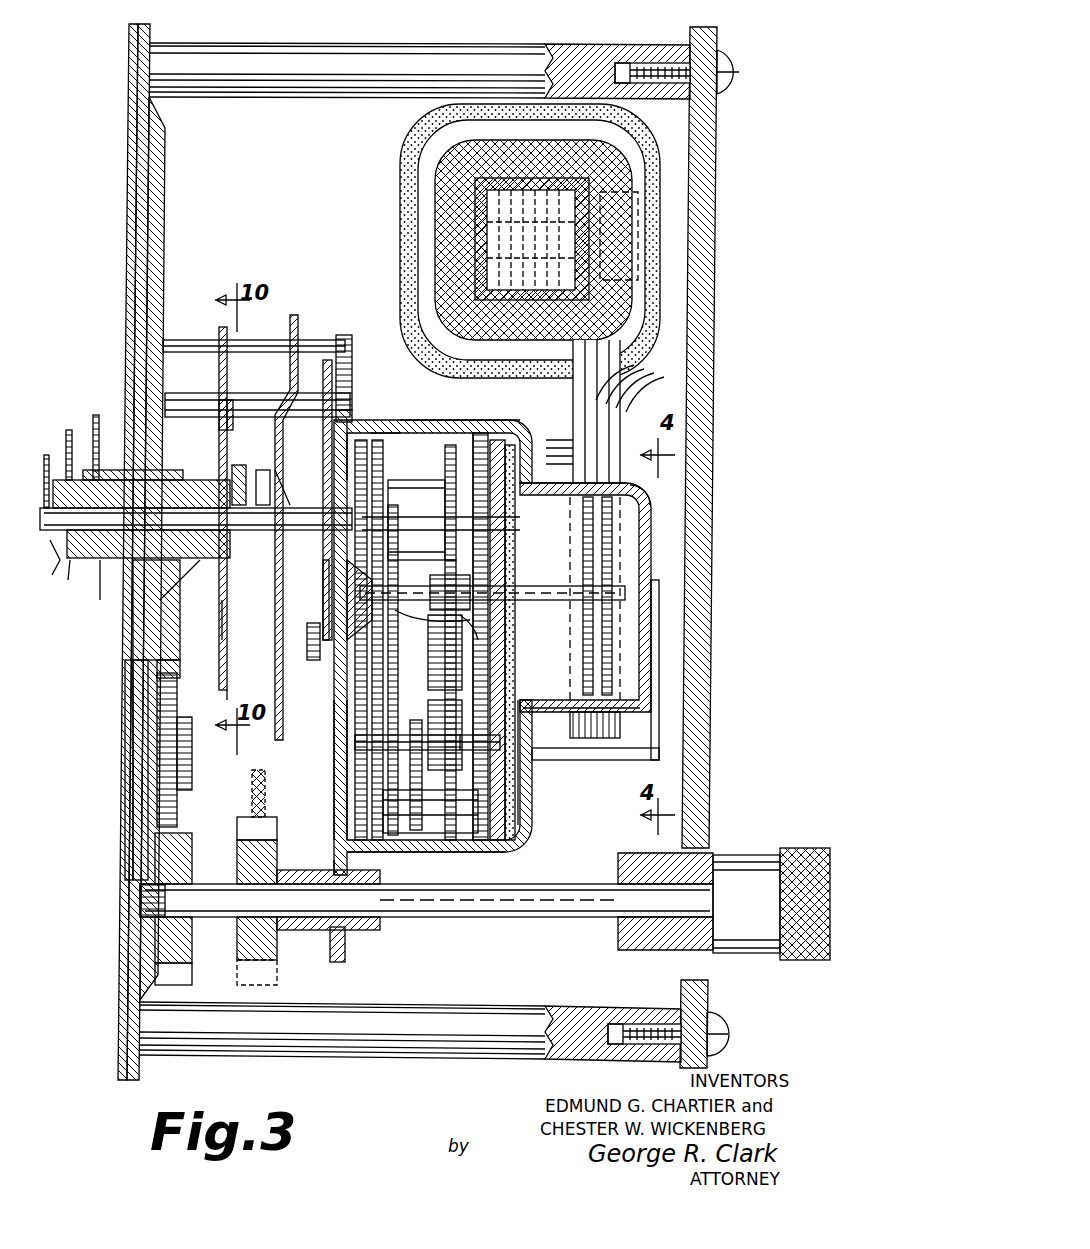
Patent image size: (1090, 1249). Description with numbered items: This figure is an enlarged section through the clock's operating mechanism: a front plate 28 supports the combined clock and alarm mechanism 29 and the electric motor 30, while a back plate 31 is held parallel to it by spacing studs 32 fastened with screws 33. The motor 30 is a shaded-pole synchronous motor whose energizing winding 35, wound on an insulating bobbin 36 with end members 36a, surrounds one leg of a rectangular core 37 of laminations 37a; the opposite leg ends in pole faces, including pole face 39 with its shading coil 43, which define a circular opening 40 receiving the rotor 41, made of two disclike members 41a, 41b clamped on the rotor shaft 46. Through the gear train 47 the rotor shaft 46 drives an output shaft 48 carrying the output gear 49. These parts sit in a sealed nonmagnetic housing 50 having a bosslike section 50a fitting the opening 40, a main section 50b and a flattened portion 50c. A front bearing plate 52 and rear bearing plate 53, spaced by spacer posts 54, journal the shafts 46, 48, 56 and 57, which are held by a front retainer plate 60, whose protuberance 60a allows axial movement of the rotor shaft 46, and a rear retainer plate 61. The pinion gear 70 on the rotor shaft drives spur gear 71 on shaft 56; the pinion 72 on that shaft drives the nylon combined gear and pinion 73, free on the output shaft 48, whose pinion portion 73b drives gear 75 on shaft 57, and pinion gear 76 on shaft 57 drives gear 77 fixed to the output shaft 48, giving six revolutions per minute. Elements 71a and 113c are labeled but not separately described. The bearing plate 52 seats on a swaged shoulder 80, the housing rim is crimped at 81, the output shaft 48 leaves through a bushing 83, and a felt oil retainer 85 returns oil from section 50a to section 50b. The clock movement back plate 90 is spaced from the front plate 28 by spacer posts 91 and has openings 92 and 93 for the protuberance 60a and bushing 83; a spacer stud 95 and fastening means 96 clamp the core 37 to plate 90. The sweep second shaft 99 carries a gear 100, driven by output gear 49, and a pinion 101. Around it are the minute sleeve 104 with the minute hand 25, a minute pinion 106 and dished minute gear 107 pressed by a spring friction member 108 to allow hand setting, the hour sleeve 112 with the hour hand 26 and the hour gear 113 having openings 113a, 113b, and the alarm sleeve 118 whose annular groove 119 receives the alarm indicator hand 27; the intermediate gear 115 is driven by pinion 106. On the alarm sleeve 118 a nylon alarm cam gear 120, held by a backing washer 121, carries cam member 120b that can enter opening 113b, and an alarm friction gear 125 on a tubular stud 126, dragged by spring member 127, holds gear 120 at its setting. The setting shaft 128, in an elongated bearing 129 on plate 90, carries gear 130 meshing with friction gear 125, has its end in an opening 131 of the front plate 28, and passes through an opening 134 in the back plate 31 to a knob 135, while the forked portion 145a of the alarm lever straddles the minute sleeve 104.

The minute hand 25 is at (48, 456).
The hour hand 26 is at (70, 432).
The alarm indicator hand 27 is at (108, 402).
The front plate 28 is at (150, 40).
The combined clock and alarm mechanism 29 is at (251, 688).
The electric motor 30 is at (456, 424).
The back plate 31 is at (712, 298).
The spacing studs 32 is at (440, 52).
The screws 33 is at (740, 66).
The energizing winding 35 is at (455, 168).
The insulating bobbin 36 is at (470, 192).
The end members 36a is at (432, 132).
The rectangular core 37 is at (628, 412).
The laminations 37a is at (636, 378).
The pole face 39 is at (618, 726).
The circular opening 40 is at (560, 486).
The rotor 41 is at (648, 548).
The disclike member 41a is at (660, 640).
The disclike member 41b is at (583, 644).
The shading coil 43 is at (625, 760).
The rotor shaft 46 is at (543, 586).
The gear train 47 is at (427, 754).
The output shaft 48 is at (478, 640).
The output gear 49 is at (310, 623).
The rotor and gear housing 50 is at (520, 852).
The bosslike circular section 50a is at (540, 714).
The main section 50b is at (447, 848).
The flattened portion 50c is at (425, 420).
The front bearing plate 52 is at (390, 433).
The rear bearing plate 53 is at (482, 442).
The spacer posts 54 is at (420, 468).
The shaft 56 is at (505, 530).
The shaft 57 is at (460, 750).
The front retainer plate 60 is at (355, 432).
The protuberance 60a is at (347, 590).
The rear retainer plate 61 is at (495, 436).
The rotor shaft pinion gear 70 is at (456, 580).
The spur gear 71 is at (448, 460).
The pinion gear 71a is at (439, 588).
The pinion 72 is at (402, 530).
The combined gear and pinion 73 is at (412, 735).
The pinion portion 73b is at (470, 625).
The gear 75 is at (420, 780).
The pinion gear 76 is at (450, 712).
The gear 77 is at (447, 652).
The shoulder 80 is at (372, 848).
The crimped portion 81 is at (345, 843).
The output shaft bushing 83 is at (340, 710).
The felt oil retainer 85 is at (532, 815).
The clock movement back plate 90 is at (345, 955).
The spacer posts 91 is at (280, 352).
The opening 92 is at (330, 585).
The opening 93 is at (340, 684).
The spacer stud 95 is at (557, 440).
The fastening means 96 is at (648, 470).
The sweep second shaft 99 is at (75, 535).
The sweep second gear 100 is at (327, 360).
The sweep second pinion 101 is at (335, 505).
The minute sleeve 104 is at (58, 572).
The minute pinion 106 is at (256, 463).
The minute gear 107 is at (298, 322).
The spring friction member 108 is at (278, 475).
The hour sleeve 112 is at (115, 480).
The hour gear 113 is at (222, 690).
The opening 113a is at (220, 402).
The opening 113b is at (224, 630).
The plate 113c is at (228, 402).
The intermediate gear 115 is at (252, 802).
The alarm sleeve 118 is at (70, 582).
The annular groove 119 is at (103, 587).
The alarm cam gear 120 is at (170, 645).
The cam member 120b is at (198, 587).
The backing washer 121 is at (133, 628).
The alarm friction gear 125 is at (180, 790).
The tubular stud 126 is at (178, 768).
The spring member 127 is at (128, 796).
The combined time and alarm setting shaft 128 is at (515, 917).
The elongated bearing 129 is at (362, 930).
The gear 130 is at (175, 985).
The opening 131 is at (140, 893).
The opening 134 is at (705, 848).
The knob 135 is at (825, 833).
The forked portion 145a is at (264, 470).